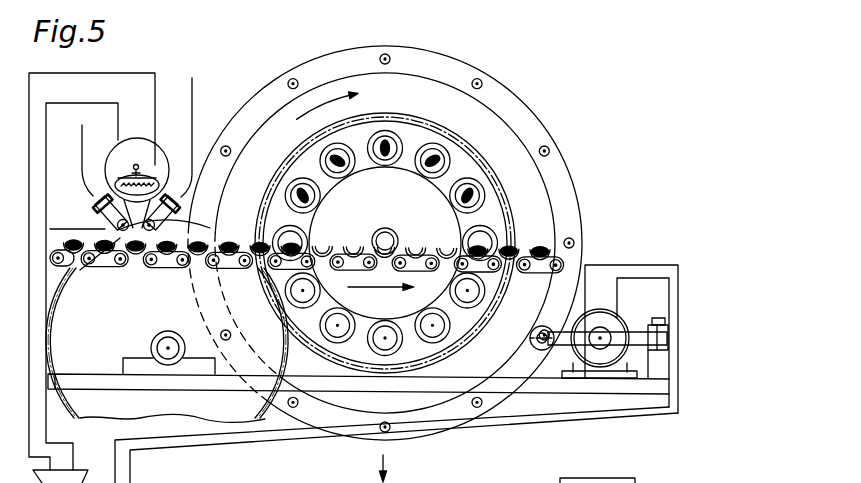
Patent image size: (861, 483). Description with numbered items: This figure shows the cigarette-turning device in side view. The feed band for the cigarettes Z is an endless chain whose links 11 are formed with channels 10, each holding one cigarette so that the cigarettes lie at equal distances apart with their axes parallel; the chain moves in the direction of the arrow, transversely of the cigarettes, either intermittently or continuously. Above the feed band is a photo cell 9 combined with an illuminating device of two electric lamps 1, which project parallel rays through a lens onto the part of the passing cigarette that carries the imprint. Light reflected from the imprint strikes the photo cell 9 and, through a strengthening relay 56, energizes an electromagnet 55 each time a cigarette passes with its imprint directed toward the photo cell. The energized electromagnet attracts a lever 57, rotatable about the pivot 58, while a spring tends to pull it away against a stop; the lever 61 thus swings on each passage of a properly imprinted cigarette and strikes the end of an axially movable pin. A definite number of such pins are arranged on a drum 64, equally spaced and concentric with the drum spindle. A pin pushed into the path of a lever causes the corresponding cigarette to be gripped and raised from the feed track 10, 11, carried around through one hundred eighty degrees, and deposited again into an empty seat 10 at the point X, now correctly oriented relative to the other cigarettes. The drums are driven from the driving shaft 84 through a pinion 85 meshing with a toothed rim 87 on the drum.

The photo cell 9 is at (140, 195).
The electric lamps 1 is at (149, 221).
The cigarettes Z is at (117, 230).
The channels 10 is at (68, 247).
The links 11 is at (108, 257).
The toothed rim 87 is at (472, 160).
The drum 64 is at (533, 138).
The deposit point X is at (498, 238).
The electromagnet 55 is at (600, 322).
The pivot 58 is at (657, 325).
The lever 57 is at (558, 342).
The lever 61 is at (542, 346).
The strengthening relay 56 is at (178, 482).
The driving shaft 84 is at (168, 350).
The pinion 85 is at (268, 418).